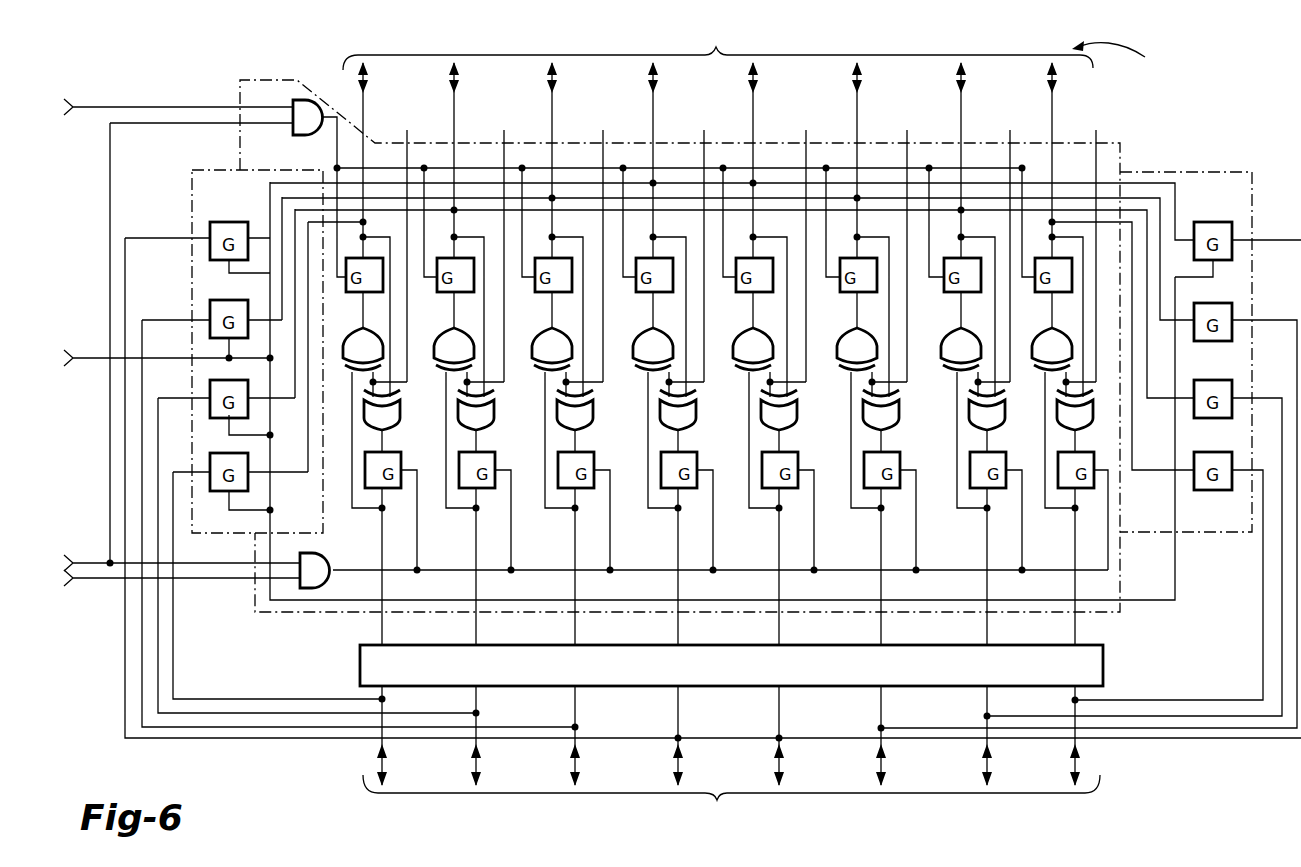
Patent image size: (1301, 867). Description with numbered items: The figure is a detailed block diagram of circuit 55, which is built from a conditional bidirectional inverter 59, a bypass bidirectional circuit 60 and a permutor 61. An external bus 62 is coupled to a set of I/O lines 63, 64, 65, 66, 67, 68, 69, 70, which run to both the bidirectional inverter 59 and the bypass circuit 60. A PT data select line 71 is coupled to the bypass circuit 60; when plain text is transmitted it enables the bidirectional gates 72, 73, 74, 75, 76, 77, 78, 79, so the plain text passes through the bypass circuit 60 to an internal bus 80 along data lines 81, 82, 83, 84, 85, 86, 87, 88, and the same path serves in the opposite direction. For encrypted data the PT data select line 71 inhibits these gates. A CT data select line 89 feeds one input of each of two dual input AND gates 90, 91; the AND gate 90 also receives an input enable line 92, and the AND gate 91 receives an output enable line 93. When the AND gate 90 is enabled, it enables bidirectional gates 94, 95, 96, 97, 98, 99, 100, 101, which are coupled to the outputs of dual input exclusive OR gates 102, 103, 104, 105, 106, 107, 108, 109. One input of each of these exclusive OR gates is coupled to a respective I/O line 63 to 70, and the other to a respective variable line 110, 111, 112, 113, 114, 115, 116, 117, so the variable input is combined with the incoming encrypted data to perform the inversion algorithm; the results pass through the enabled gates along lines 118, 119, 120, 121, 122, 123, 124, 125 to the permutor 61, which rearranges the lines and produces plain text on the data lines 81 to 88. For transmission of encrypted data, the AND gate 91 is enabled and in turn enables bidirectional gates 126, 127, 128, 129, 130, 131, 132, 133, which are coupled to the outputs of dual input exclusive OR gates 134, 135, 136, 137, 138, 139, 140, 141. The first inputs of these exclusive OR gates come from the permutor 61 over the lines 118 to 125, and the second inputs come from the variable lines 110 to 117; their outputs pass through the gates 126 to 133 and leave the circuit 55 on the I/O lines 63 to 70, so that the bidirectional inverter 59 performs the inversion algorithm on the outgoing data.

The circuit 55 is at (1117, 59).
The conditional bidirectional inverter 59 is at (283, 80).
The bypass bidirectional circuit 60 is at (236, 170).
The permutor 61 is at (1103, 662).
The external bus 62 is at (718, 52).
The I/O line 63 is at (367, 104).
The I/O line 64 is at (458, 104).
The I/O line 65 is at (556, 104).
The I/O line 66 is at (657, 104).
The I/O line 67 is at (757, 104).
The I/O line 68 is at (861, 104).
The I/O line 69 is at (965, 104).
The I/O line 70 is at (1056, 104).
The PT data select line 71 is at (104, 356).
The bidirectional gate 72 is at (244, 212).
The bidirectional gate 73 is at (240, 288).
The bidirectional gate 74 is at (224, 420).
The bidirectional gate 75 is at (224, 494).
The bidirectional gate 76 is at (1234, 210).
The bidirectional gate 77 is at (1240, 292).
The bidirectional gate 78 is at (1240, 370).
The bidirectional gate 79 is at (1240, 442).
The internal bus 80 is at (717, 800).
The data line 81 is at (385, 765).
The data line 82 is at (479, 765).
The data line 83 is at (578, 765).
The data line 84 is at (681, 765).
The data line 85 is at (777, 762).
The data line 86 is at (879, 762).
The data line 87 is at (985, 762).
The data line 88 is at (1073, 762).
The CT data select line 89 is at (104, 563).
The AND gate 90 is at (333, 584).
The AND gate 91 is at (296, 100).
The input enable line 92 is at (104, 580).
The output enable line 93 is at (121, 100).
The bidirectional gate 94 is at (400, 458).
The bidirectional gate 95 is at (494, 458).
The bidirectional gate 96 is at (593, 458).
The bidirectional gate 97 is at (696, 458).
The bidirectional gate 98 is at (797, 458).
The bidirectional gate 99 is at (899, 458).
The bidirectional gate 100 is at (1005, 458).
The bidirectional gate 101 is at (1105, 456).
The exclusive OR gate 102 is at (416, 430).
The exclusive OR gate 103 is at (510, 430).
The exclusive OR gate 104 is at (609, 430).
The exclusive OR gate 105 is at (712, 430).
The exclusive OR gate 106 is at (813, 430).
The exclusive OR gate 107 is at (915, 430).
The exclusive OR gate 108 is at (1021, 430).
The exclusive OR gate 109 is at (1106, 424).
The variable line 110 is at (419, 124).
The variable line 111 is at (516, 124).
The variable line 112 is at (615, 124).
The variable line 113 is at (716, 124).
The variable line 114 is at (818, 124).
The variable line 115 is at (919, 124).
The variable line 116 is at (1022, 124).
The variable line 117 is at (1108, 124).
The line to permutor 118 is at (384, 640).
The line to permutor 119 is at (478, 640).
The line to permutor 120 is at (577, 640).
The line to permutor 121 is at (680, 640).
The line to permutor 122 is at (781, 640).
The line to permutor 123 is at (883, 640).
The line to permutor 124 is at (989, 640).
The line to permutor 125 is at (1077, 640).
The bidirectional gate 126 is at (347, 288).
The bidirectional gate 127 is at (438, 288).
The bidirectional gate 128 is at (536, 288).
The bidirectional gate 129 is at (637, 288).
The bidirectional gate 130 is at (737, 288).
The bidirectional gate 131 is at (841, 288).
The bidirectional gate 132 is at (945, 288).
The bidirectional gate 133 is at (1036, 288).
The exclusive OR gate 134 is at (344, 348).
The exclusive OR gate 135 is at (435, 348).
The exclusive OR gate 136 is at (533, 348).
The exclusive OR gate 137 is at (634, 348).
The exclusive OR gate 138 is at (734, 348).
The exclusive OR gate 139 is at (838, 348).
The exclusive OR gate 140 is at (942, 348).
The exclusive OR gate 141 is at (1033, 348).